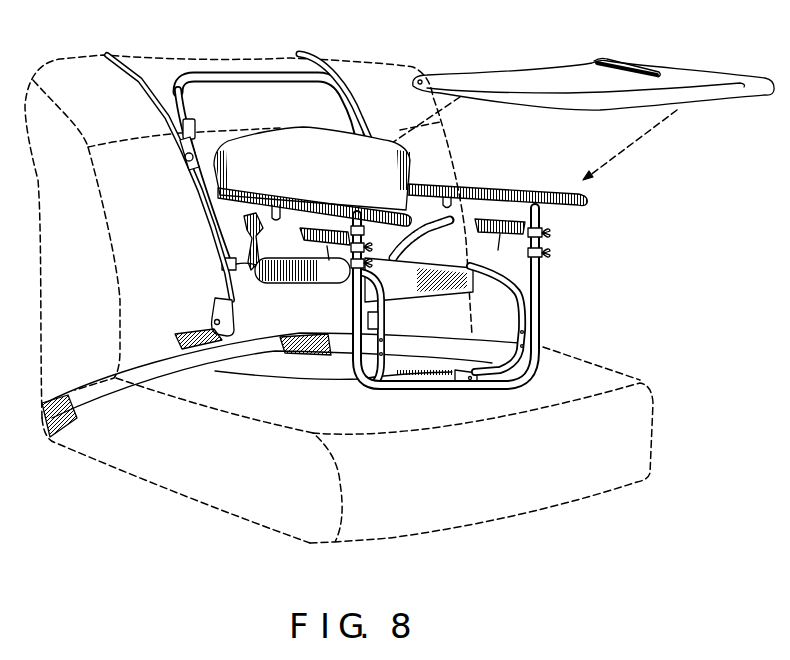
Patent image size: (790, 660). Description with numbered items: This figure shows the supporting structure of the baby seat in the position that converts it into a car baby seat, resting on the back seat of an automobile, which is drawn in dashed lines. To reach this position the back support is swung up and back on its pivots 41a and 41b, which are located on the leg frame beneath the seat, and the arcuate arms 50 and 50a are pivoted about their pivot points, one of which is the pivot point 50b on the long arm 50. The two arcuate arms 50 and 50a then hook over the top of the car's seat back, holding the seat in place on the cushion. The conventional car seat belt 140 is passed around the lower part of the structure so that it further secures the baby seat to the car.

The arcuate arm 50 is at (113, 50).
The arcuate arm 50a is at (297, 54).
The pivot point 50b is at (187, 162).
The pivot 41a is at (180, 328).
The pivot 41b is at (380, 322).
The car seat belt 140 is at (193, 360).